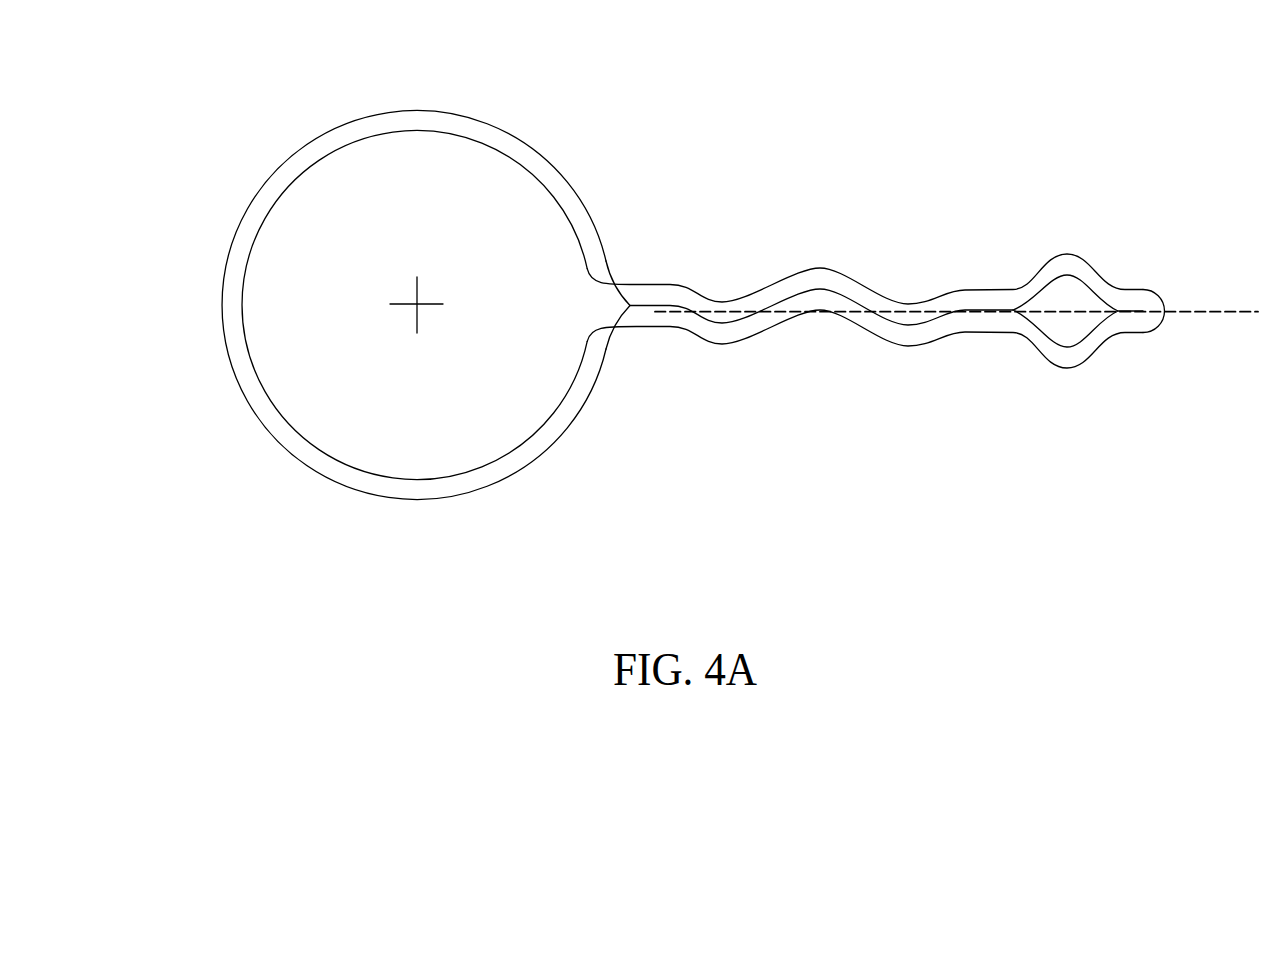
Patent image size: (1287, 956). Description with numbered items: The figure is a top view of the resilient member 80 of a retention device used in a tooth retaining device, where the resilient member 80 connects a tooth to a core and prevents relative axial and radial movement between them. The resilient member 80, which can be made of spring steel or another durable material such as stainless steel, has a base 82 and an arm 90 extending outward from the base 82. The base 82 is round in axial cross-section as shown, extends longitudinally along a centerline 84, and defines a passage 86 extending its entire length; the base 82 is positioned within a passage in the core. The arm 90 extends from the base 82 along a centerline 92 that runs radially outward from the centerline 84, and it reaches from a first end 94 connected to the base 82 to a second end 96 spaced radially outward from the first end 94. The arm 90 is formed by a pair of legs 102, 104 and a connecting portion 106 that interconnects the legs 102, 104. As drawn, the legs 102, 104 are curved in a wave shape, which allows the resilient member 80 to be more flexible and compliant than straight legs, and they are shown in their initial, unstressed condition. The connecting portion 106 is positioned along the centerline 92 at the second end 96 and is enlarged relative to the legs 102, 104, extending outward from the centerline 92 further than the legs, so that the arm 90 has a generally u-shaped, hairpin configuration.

The resilient member 80 is at (206, 140).
The base 82 is at (545, 170).
The centerline 84 is at (413, 293).
The passage 86 is at (411, 156).
The arm 90 is at (957, 329).
The centerline 92 is at (1205, 313).
The first end 94 is at (655, 356).
The second end 96 is at (1137, 359).
The leg 102 is at (862, 287).
The leg 104 is at (863, 317).
The connecting portion 106 is at (1067, 262).